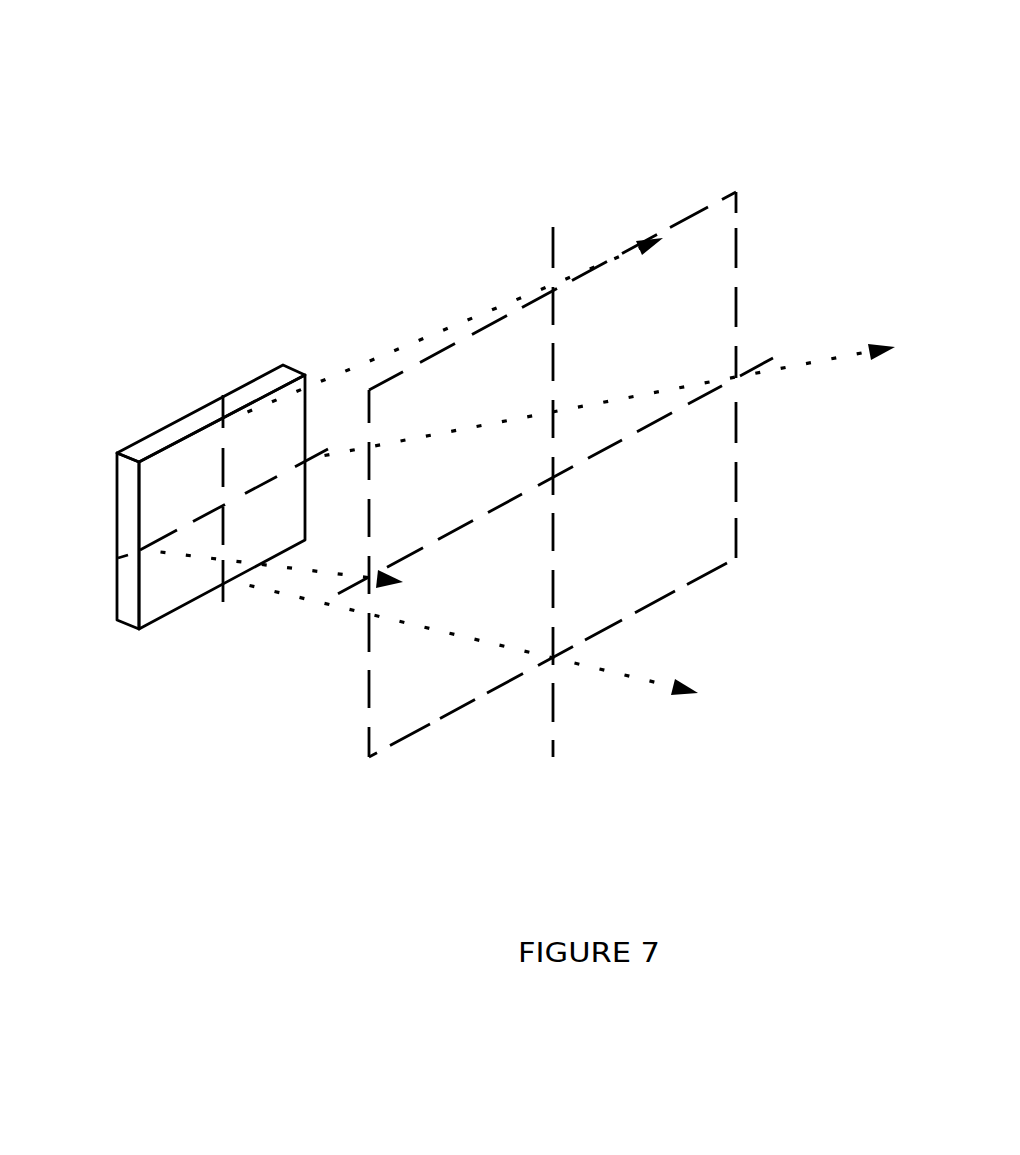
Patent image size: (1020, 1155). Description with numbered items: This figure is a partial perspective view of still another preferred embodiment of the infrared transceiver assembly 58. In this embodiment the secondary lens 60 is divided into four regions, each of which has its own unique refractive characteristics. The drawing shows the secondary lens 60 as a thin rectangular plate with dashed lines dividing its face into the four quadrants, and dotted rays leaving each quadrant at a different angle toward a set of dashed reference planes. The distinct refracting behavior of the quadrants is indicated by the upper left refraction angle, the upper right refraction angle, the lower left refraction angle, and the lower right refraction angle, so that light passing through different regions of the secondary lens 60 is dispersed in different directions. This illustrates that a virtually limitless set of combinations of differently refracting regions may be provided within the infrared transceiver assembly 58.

The infrared transceiver assembly 58 is at (447, 147).
The secondary lens 60 is at (238, 530).